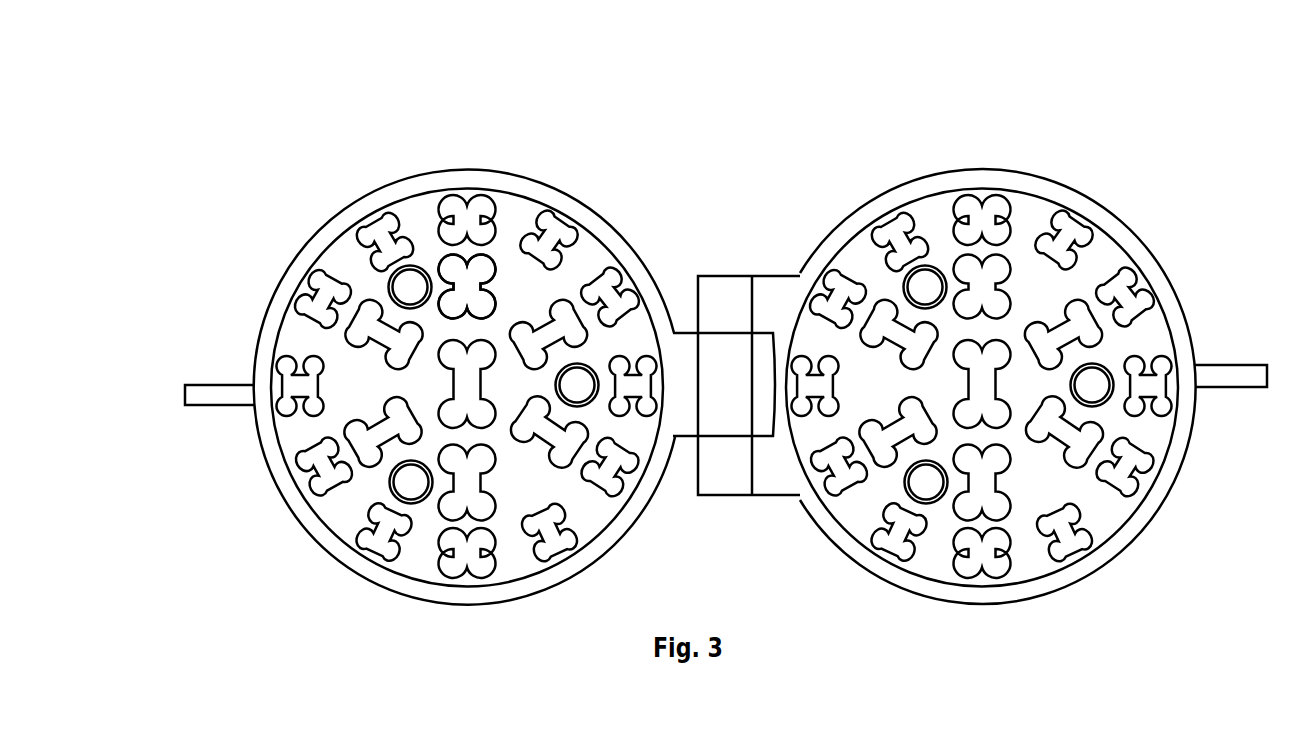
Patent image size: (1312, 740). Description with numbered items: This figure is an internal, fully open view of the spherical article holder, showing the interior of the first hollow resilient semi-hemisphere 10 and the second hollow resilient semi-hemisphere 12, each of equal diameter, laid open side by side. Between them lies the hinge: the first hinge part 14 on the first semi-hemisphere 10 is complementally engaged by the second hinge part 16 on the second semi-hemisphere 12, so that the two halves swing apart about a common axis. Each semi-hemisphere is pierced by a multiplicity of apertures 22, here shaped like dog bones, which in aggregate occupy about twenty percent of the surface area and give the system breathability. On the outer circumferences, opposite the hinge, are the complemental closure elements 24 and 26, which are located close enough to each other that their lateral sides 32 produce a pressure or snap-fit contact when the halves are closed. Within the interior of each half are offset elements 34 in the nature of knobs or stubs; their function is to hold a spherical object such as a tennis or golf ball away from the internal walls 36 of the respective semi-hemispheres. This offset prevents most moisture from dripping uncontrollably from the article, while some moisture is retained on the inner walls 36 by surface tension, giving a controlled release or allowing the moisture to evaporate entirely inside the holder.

The first hollow resilient semi-hemisphere 10 is at (407, 170).
The second hollow resilient semi-hemisphere 12 is at (1110, 554).
The first hinge part 14 is at (737, 372).
The second hinge part 16 is at (723, 296).
The apertures 22 is at (552, 336).
The closure element 24 is at (205, 392).
The closure element 26 is at (1222, 377).
The lateral sides 32 is at (222, 377).
The offset elements 34 is at (928, 287).
The internal walls 36 is at (521, 293).